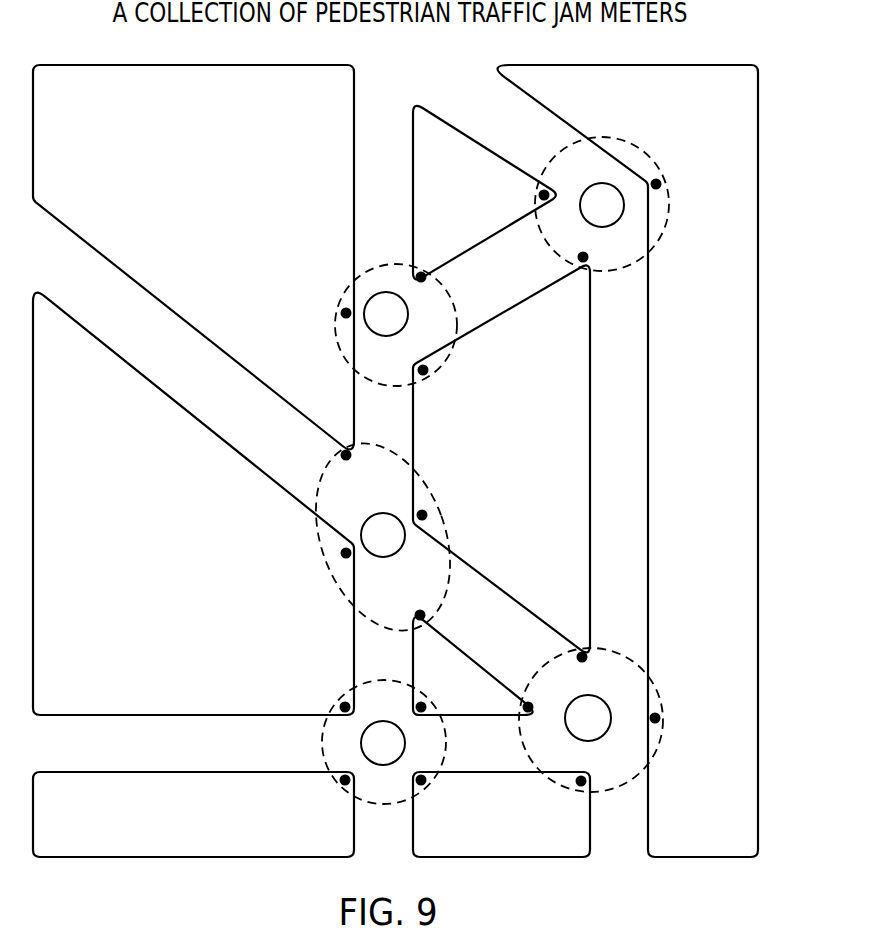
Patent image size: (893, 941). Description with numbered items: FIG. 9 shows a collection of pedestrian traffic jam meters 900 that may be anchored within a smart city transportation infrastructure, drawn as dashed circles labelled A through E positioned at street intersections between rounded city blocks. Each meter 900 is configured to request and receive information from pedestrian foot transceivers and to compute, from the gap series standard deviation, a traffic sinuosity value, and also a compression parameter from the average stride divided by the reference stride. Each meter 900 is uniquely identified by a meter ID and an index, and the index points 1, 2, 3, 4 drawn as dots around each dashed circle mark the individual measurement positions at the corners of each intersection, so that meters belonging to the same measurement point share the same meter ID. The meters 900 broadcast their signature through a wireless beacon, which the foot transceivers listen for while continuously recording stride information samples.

The pedestrian traffic jam meter 900 is at (376, 293).
The first intersection corner 1 is at (454, 447).
The second intersection corner 2 is at (551, 447).
The third intersection corner 3 is at (502, 535).
The fourth intersection corner 4 is at (422, 682).